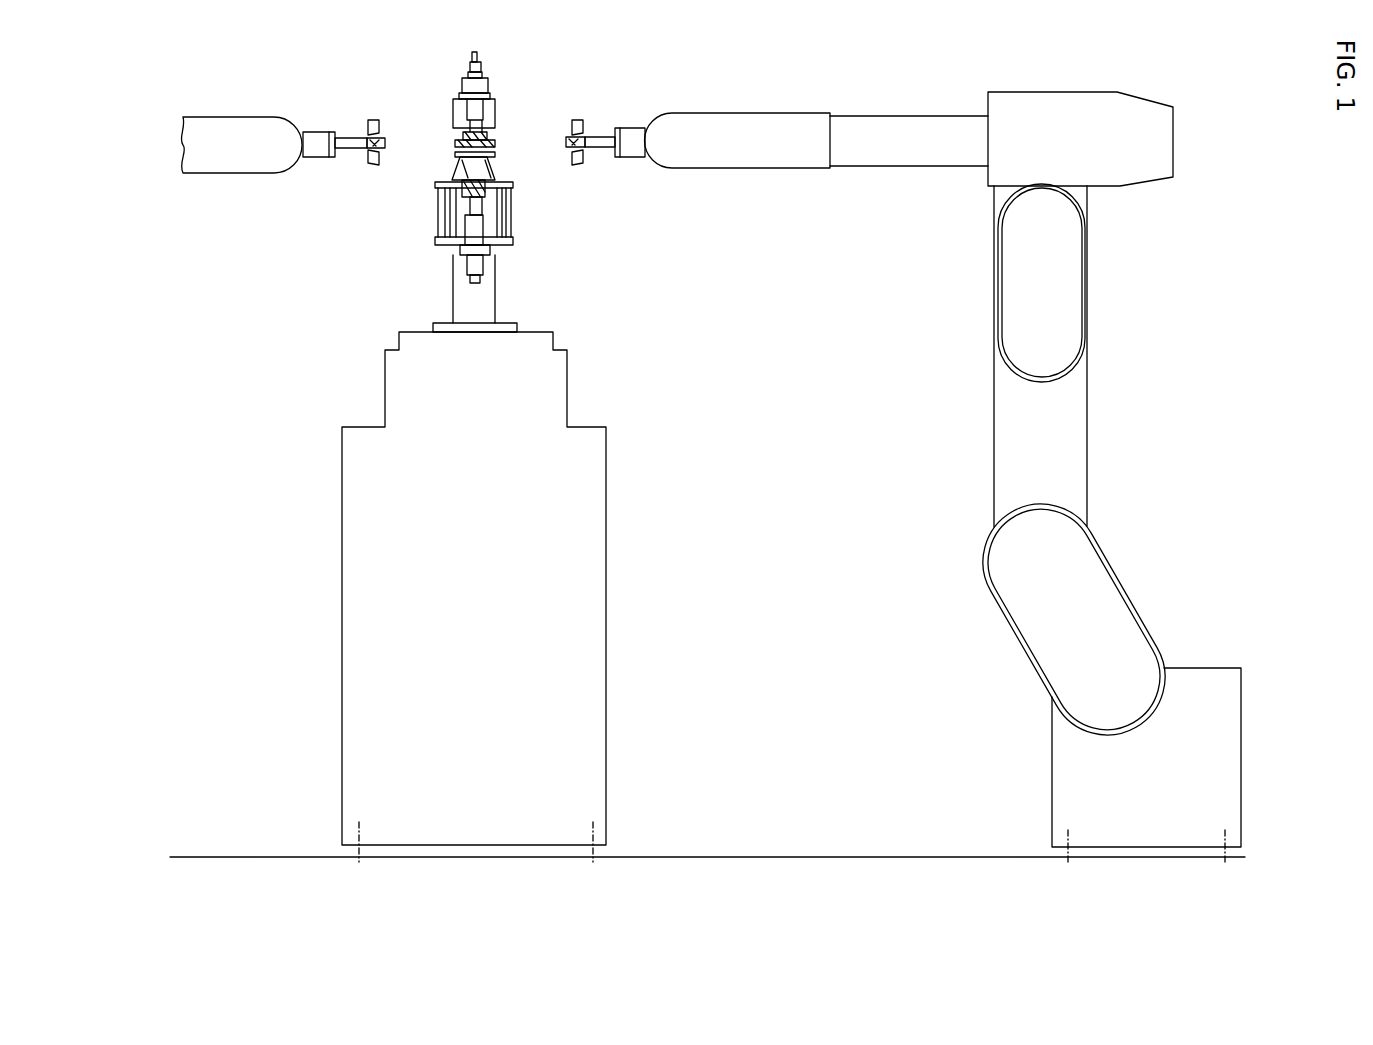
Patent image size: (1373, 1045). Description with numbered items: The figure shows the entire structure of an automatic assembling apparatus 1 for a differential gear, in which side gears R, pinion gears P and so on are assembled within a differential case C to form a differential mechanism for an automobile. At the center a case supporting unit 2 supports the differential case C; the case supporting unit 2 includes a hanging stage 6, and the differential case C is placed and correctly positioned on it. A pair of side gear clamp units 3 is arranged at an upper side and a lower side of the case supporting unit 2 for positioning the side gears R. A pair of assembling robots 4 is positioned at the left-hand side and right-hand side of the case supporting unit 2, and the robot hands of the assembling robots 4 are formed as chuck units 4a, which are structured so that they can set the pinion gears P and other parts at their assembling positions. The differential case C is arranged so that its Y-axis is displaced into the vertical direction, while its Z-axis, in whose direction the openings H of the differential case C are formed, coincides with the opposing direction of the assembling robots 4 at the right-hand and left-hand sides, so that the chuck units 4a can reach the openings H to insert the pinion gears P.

The automatic assembling apparatus 1 is at (790, 81).
The case supporting unit 2 is at (530, 330).
The side gear clamp unit 3 is at (485, 88).
The assembling robot 4 is at (1082, 290).
The chuck unit 4a is at (800, 162).
The hanging stage 6 is at (495, 276).
The pinion gear P is at (578, 120).
The differential case C is at (487, 137).
The opening H is at (449, 161).
The side gear R is at (492, 167).